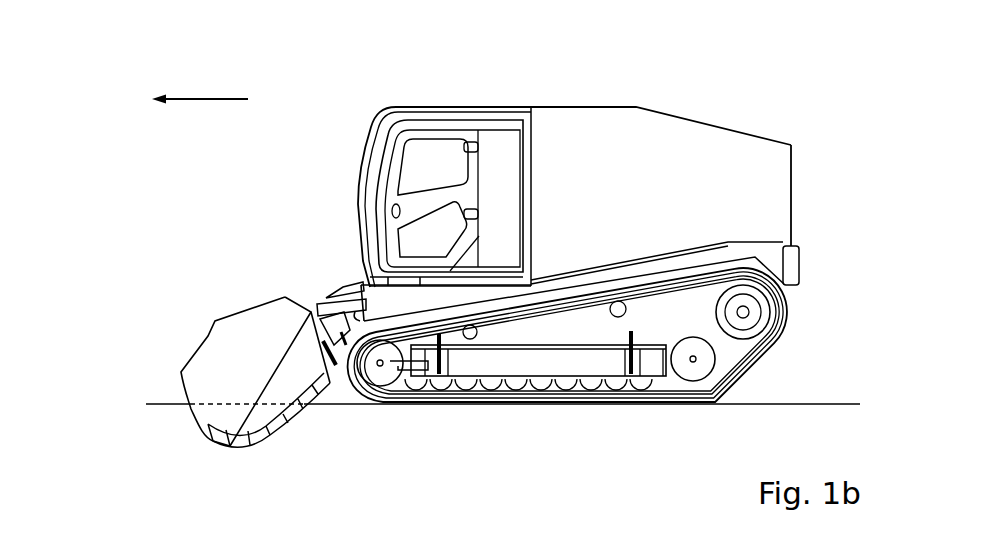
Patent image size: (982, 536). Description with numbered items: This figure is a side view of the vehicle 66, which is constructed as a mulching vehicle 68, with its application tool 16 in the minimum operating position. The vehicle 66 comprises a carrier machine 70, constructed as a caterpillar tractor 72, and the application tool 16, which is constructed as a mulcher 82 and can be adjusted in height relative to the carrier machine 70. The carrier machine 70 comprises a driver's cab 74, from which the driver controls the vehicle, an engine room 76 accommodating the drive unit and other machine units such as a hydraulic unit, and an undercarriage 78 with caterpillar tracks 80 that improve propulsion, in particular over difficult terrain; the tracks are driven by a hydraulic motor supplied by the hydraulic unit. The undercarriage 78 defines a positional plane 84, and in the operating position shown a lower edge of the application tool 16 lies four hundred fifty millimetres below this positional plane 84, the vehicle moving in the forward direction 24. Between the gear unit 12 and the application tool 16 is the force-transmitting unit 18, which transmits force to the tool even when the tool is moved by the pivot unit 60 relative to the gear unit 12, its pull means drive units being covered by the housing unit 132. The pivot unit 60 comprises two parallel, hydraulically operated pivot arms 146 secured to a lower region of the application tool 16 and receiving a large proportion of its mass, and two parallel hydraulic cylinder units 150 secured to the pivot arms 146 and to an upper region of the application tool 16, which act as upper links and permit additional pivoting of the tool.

The gear unit 12 is at (589, 188).
The application tool 16 is at (235, 364).
The mulcher 82 is at (235, 364).
The force-transmitting unit 18 is at (327, 288).
The forward direction 24 is at (215, 101).
The pivot unit 60 is at (340, 392).
The vehicle 66 is at (818, 170).
The mulching vehicle 68 is at (806, 147).
The carrier machine 70 is at (661, 100).
The caterpillar tractor 72 is at (730, 118).
The driver's cab 74 is at (446, 178).
The engine room 76 is at (608, 188).
The undercarriage 78 is at (603, 366).
The caterpillar tracks 80 is at (750, 386).
The positional plane 84 is at (158, 409).
The housing unit 132 is at (319, 327).
The pivot arms 146 is at (278, 437).
The hydraulic cylinder units 150 is at (319, 305).